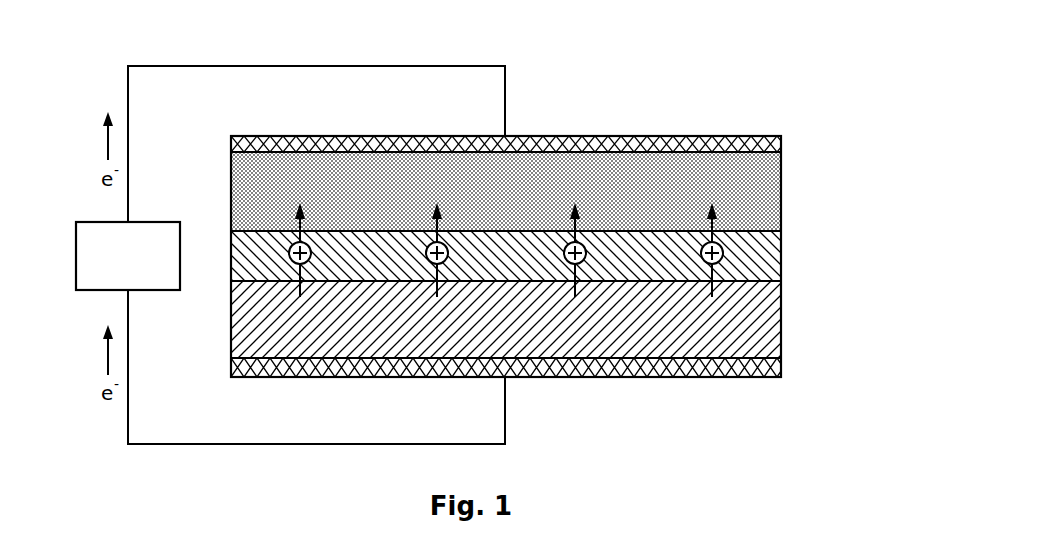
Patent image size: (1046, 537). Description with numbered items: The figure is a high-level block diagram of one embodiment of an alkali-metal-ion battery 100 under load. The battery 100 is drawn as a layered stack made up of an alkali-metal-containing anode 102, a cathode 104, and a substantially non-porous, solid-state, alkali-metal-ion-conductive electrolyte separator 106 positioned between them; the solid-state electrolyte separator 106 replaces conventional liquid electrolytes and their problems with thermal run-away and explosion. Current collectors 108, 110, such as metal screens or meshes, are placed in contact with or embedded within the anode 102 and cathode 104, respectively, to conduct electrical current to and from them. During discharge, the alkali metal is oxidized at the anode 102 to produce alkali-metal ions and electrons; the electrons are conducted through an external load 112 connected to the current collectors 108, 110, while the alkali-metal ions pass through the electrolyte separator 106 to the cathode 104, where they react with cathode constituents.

The alkali-metal-ion battery 100 is at (637, 71).
The alkali-metal-containing anode 102 is at (765, 324).
The cathode 104 is at (760, 186).
The alkali-metal-ion-conductive electrolyte separator 106 is at (765, 258).
The current collector 108 is at (768, 144).
The current collector 110 is at (768, 367).
The load 112 is at (78, 256).